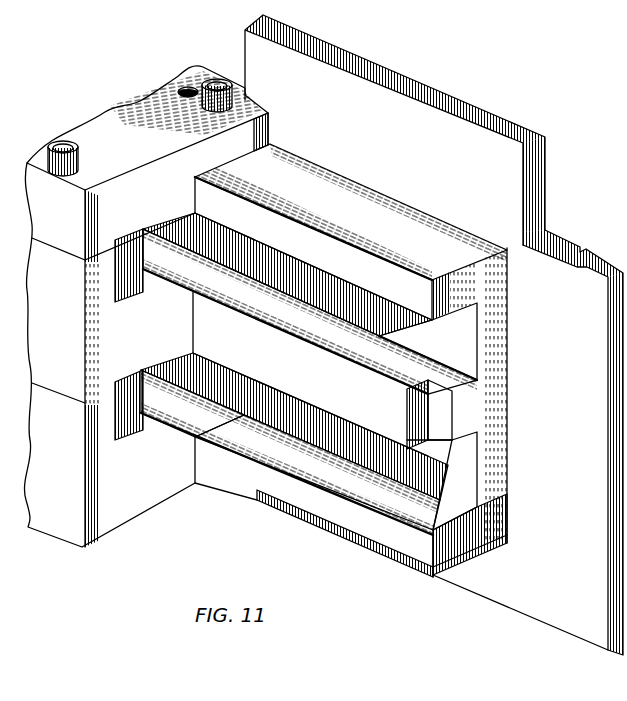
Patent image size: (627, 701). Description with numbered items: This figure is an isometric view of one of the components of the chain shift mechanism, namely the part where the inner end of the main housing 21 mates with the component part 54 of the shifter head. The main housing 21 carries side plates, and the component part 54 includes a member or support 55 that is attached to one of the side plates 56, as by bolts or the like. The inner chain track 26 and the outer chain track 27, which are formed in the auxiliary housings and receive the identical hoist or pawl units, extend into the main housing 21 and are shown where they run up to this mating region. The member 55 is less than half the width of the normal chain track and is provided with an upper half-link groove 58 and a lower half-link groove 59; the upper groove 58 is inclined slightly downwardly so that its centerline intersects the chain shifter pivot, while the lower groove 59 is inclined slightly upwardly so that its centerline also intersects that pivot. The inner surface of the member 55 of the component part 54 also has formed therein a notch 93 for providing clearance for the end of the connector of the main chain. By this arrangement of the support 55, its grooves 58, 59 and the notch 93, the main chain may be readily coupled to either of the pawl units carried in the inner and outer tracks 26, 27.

The main housing 21 is at (113, 95).
The inner chain track 26 is at (182, 212).
The outer chain track 27 is at (160, 442).
The component part of the shifter head 54 is at (455, 570).
The member or support 55 is at (498, 403).
The side plate 56 is at (422, 96).
The upper half-link groove 58 is at (458, 340).
The lower half-link groove 59 is at (462, 478).
The notch 93 is at (441, 407).